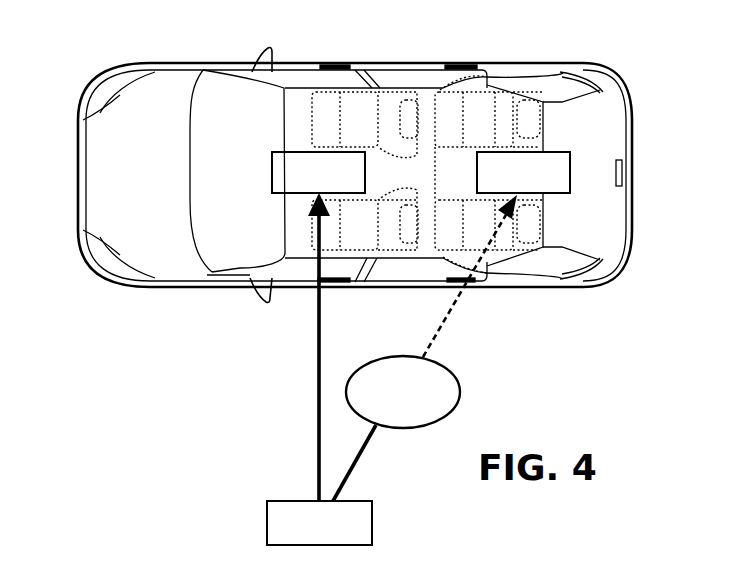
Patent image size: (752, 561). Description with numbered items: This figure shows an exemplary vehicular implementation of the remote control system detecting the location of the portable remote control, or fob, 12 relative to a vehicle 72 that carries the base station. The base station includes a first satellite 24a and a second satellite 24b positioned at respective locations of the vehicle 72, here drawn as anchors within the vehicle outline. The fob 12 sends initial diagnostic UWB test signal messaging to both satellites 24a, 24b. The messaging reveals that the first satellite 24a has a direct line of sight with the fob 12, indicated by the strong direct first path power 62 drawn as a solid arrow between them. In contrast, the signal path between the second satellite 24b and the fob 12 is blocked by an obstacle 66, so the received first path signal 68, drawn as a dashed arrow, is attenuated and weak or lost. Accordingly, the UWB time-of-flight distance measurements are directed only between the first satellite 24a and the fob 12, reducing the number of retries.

The vehicle 72 is at (213, 62).
The first satellite 24a is at (270, 172).
The second satellite 24b is at (571, 172).
The portable remote control 12 is at (291, 500).
The direct first path power 62 is at (305, 405).
The obstacle 66 is at (402, 355).
The first path signal 68 is at (458, 318).